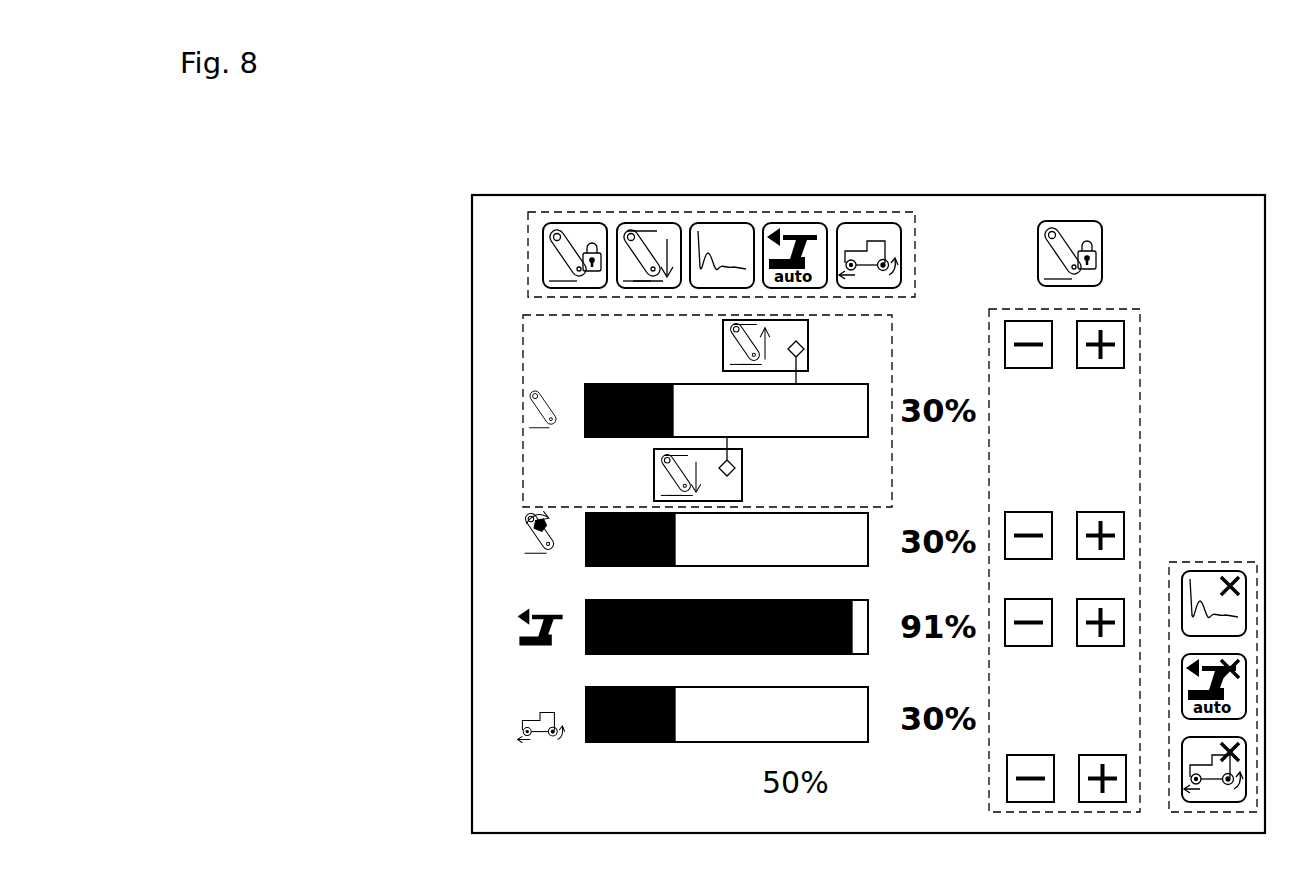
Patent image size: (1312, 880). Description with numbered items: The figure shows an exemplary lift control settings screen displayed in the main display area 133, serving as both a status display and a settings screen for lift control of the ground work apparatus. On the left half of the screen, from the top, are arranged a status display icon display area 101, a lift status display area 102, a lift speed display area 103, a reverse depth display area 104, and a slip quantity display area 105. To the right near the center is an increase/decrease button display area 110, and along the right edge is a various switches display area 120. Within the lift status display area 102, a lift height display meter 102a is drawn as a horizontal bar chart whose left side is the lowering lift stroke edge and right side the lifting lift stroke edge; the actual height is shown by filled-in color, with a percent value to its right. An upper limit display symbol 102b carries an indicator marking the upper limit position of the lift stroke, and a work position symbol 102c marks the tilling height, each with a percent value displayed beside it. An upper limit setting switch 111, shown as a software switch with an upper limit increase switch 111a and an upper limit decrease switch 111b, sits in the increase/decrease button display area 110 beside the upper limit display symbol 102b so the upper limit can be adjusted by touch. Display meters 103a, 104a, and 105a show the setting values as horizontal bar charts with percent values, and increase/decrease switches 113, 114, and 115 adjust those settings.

The main display area 133 is at (536, 196).
The status display icon display area 101 is at (528, 250).
The lift status display area 102 is at (749, 409).
The lift height display meter 102a is at (843, 438).
The upper limit display symbol 102b is at (723, 341).
The work position symbol 102c is at (654, 477).
The lift speed display area 103 is at (709, 553).
The display meter 103a is at (725, 567).
The reverse depth display area 104 is at (723, 643).
The display meter 104a is at (765, 655).
The slip quantity display area 105 is at (743, 747).
The display meter 105a is at (855, 742).
The increase/decrease button display area 110 is at (1097, 536).
The upper limit setting switch 111 is at (1089, 343).
The upper limit increase switch 111a is at (1124, 333).
The upper limit decrease switch 111b is at (1030, 321).
The increase/decrease switch 113 is at (1073, 489).
The increase/decrease switch 114 is at (1069, 666).
The increase/decrease switch 115 is at (1072, 740).
The various switches display area 120 is at (1184, 560).